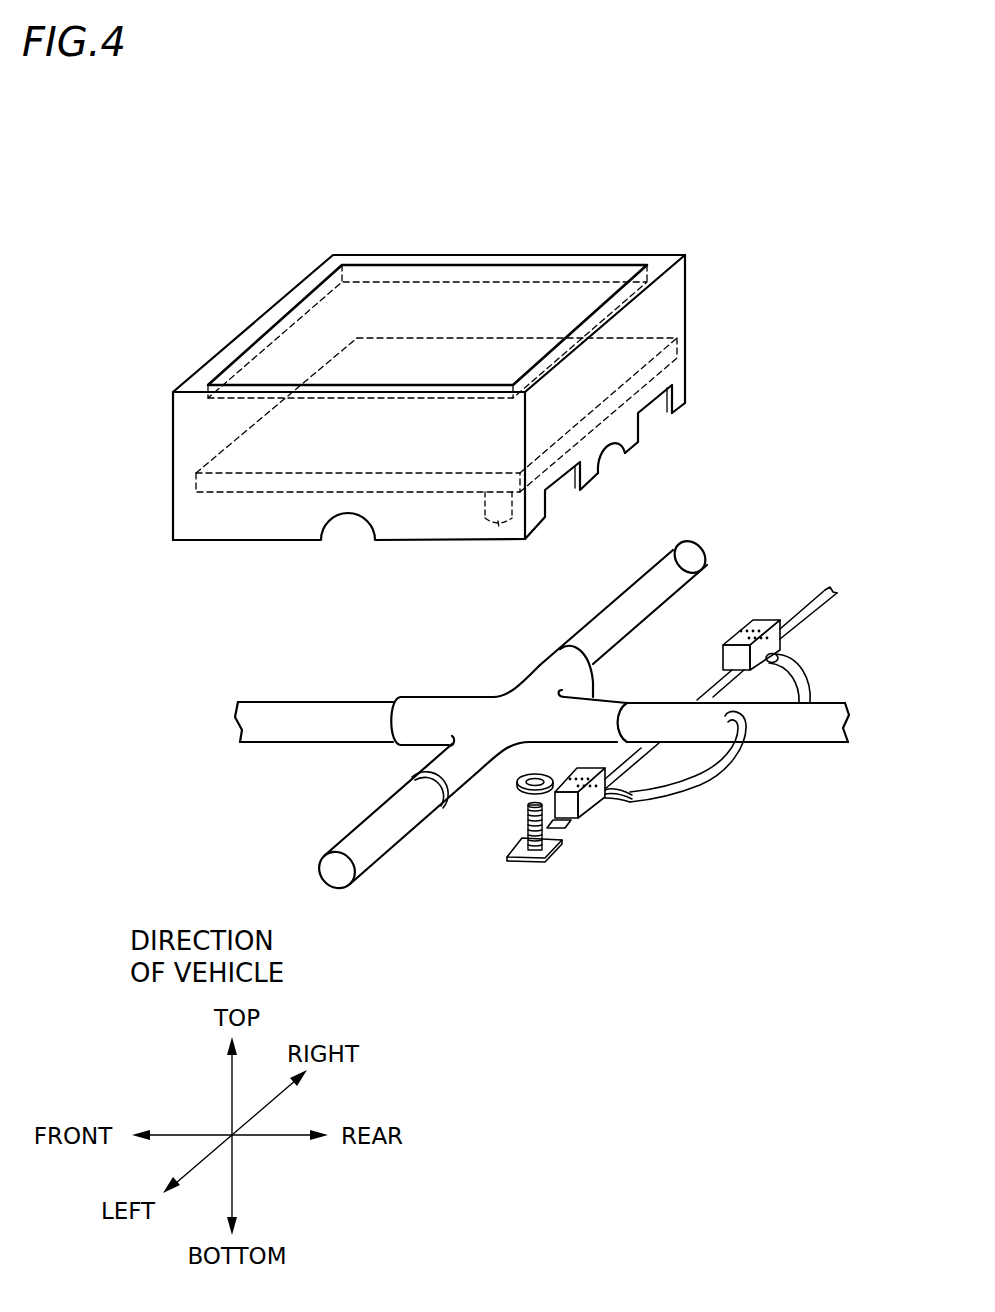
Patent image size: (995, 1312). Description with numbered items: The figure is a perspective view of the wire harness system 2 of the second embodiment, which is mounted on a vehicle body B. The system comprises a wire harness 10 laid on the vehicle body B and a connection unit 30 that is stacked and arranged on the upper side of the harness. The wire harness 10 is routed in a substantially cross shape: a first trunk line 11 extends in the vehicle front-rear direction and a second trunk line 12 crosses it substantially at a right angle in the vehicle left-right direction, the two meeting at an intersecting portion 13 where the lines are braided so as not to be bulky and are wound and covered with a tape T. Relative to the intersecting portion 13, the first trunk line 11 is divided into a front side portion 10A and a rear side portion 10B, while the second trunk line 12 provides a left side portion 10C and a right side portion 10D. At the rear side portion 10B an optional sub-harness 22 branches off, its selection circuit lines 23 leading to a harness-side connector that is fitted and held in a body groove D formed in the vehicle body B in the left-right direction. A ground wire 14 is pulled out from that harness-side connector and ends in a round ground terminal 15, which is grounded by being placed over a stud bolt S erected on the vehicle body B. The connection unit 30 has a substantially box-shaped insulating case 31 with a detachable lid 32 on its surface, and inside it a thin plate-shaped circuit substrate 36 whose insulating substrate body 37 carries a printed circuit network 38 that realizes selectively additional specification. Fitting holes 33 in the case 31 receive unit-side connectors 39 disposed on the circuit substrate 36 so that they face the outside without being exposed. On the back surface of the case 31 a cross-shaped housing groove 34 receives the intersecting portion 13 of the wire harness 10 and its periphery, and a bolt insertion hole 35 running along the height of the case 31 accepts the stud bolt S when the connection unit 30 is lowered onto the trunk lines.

The wire harness system 2 is at (285, 205).
The connection unit 30 is at (466, 248).
The case 31 is at (532, 258).
The lid 32 is at (412, 268).
The fitting holes 33 is at (660, 405).
The housing groove 34 is at (613, 457).
The bolt insertion hole 35 is at (500, 528).
The circuit substrate 36 is at (270, 449).
The substrate body 37 is at (233, 463).
The circuit network 38 is at (217, 484).
The unit-side connector 39 is at (650, 415).
The wire harness 10 is at (400, 855).
The front side portion 10A is at (317, 700).
The rear side portion 10B is at (822, 737).
The left side portion 10C is at (415, 817).
The right side portion 10D is at (680, 553).
The first trunk line 11 is at (347, 705).
The second trunk line 12 is at (363, 868).
The intersecting portion 13 is at (498, 703).
The ground wire 14 is at (747, 622).
The ground terminal 15 is at (527, 822).
The optional sub-harness 22 is at (805, 675).
The selection circuit lines 23 is at (777, 657).
The tape T is at (450, 705).
The body groove D is at (808, 602).
The stud bolt S is at (535, 860).
The vehicle body B is at (757, 857).